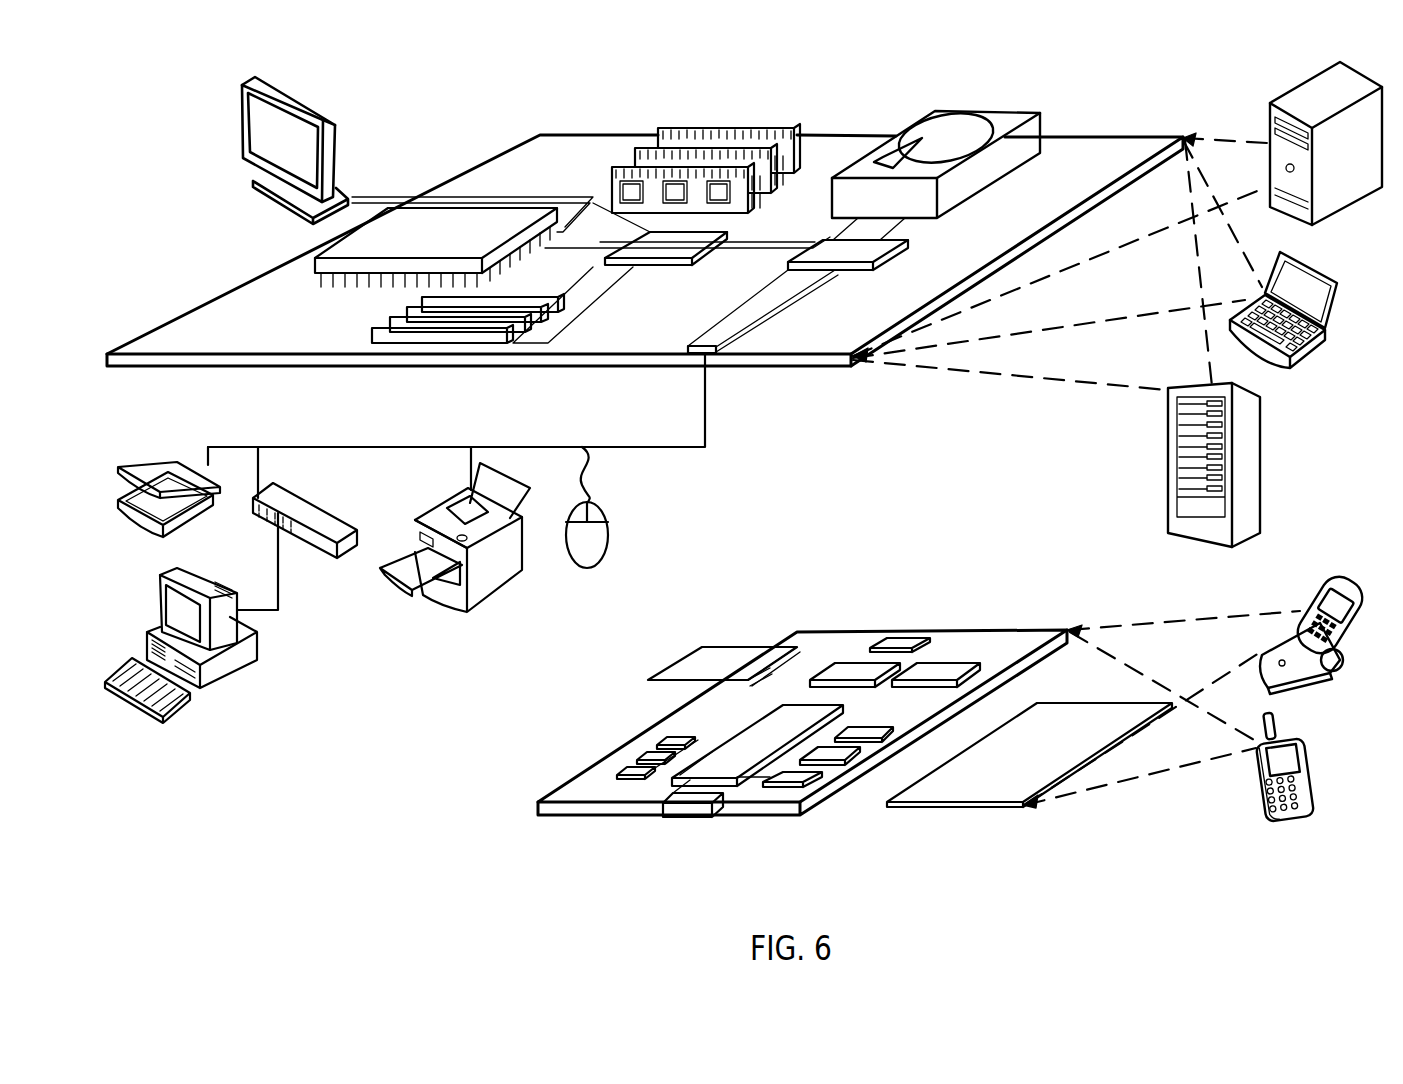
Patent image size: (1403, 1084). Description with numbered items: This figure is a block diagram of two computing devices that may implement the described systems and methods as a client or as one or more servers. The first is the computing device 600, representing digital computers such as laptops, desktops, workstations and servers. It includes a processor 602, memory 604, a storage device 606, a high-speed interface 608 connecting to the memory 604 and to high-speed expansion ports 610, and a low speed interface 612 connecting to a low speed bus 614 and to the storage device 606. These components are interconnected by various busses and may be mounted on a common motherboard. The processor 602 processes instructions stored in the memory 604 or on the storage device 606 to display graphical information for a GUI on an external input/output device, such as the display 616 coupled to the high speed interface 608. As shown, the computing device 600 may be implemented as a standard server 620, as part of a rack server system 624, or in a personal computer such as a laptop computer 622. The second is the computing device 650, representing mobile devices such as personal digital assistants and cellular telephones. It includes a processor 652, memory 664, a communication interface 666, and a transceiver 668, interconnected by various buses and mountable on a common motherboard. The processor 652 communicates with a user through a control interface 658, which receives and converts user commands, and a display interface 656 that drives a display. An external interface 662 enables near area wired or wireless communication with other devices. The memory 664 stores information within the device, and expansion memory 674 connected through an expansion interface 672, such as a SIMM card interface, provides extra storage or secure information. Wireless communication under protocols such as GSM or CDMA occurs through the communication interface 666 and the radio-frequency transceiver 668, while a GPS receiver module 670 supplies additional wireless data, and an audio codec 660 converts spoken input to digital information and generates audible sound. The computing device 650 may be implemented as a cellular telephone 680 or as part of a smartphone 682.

The computing device 600 is at (452, 103).
The processor 602 is at (318, 262).
The memory 604 is at (661, 127).
The storage device 606 is at (918, 115).
The high-speed interface 608 is at (642, 249).
The high-speed expansion ports 610 is at (372, 331).
The low speed interface 612 is at (829, 253).
The low speed bus 614 is at (716, 355).
The display 616 is at (243, 82).
The standard server 620 is at (1268, 121).
The laptop computer 622 is at (1338, 281).
The rack server system 624 is at (1168, 482).
The computing device 650 is at (505, 823).
The processor 652 is at (725, 768).
The display interface 656 is at (800, 776).
The control interface 658 is at (835, 753).
The audio codec 660 is at (862, 729).
The external interface 662 is at (688, 797).
The memory 664 is at (640, 761).
The communication interface 666 is at (855, 672).
The transceiver 668 is at (935, 670).
The GPS receiver module 670 is at (906, 640).
The expansion interface 672 is at (778, 646).
The expansion memory 674 is at (703, 646).
The cellular telephone 680 is at (1311, 585).
The smartphone 682 is at (1252, 790).